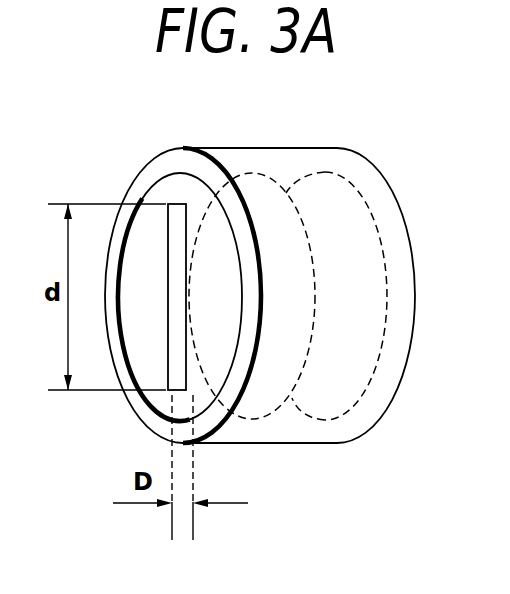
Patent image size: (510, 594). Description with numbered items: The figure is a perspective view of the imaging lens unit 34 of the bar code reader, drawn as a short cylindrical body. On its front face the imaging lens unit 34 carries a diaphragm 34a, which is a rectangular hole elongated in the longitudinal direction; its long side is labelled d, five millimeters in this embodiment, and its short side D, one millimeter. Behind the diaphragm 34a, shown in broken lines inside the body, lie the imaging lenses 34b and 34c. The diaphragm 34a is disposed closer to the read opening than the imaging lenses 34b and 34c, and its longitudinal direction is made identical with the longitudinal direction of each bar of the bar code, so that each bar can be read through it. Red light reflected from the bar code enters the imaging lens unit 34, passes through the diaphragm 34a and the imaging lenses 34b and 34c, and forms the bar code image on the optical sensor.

The imaging lens unit 34 is at (350, 130).
The diaphragm 34a is at (178, 296).
The imaging lens 34b is at (263, 398).
The imaging lens 34c is at (343, 400).